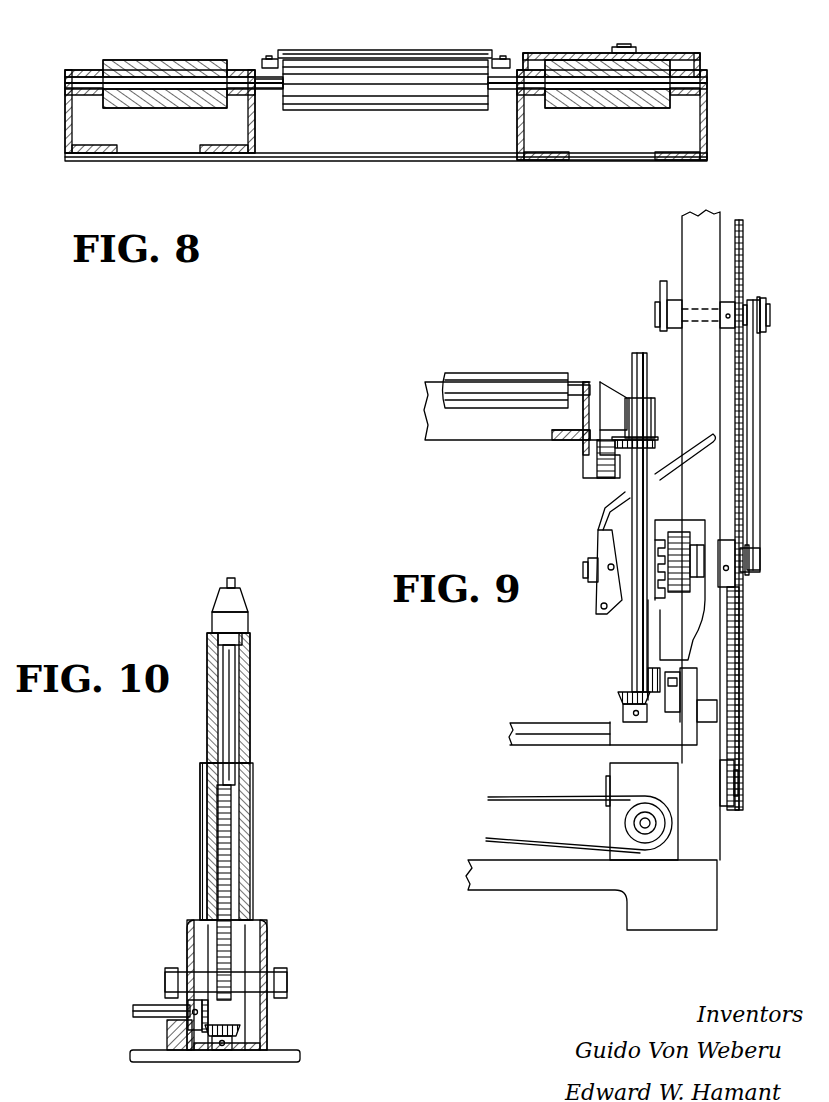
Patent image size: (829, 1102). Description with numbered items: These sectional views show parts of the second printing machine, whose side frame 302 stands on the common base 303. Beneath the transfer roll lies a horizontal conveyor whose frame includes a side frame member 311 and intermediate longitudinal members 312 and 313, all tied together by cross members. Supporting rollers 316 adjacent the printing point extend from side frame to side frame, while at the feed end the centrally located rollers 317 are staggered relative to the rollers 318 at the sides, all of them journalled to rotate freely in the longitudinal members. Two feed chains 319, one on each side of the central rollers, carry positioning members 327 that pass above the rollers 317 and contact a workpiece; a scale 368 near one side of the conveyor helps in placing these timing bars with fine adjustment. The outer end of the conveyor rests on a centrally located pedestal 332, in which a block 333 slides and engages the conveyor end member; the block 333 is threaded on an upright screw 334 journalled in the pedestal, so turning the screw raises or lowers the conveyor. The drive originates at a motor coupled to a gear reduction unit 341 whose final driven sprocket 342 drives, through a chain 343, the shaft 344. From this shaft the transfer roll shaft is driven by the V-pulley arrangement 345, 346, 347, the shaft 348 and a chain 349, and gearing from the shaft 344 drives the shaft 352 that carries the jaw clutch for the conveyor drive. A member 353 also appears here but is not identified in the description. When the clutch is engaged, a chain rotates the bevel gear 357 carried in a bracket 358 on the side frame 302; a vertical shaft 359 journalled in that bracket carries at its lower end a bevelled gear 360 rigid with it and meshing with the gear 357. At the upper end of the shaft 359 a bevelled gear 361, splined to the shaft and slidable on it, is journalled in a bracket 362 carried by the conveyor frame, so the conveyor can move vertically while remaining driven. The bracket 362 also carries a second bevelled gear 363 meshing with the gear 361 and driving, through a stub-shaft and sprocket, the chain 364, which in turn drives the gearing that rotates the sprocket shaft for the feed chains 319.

In FIG. 9, the side frame 302 is at (718, 210).
In FIG. 9, the common base 303 is at (482, 878).
In FIG. 8, the conveyor side frame member 311 is at (708, 108).
In FIG. 8, the intermediate longitudinal member 312 is at (485, 130).
In FIG. 8, the intermediate longitudinal member 313 is at (250, 128).
In FIG. 8, the supporting rollers 316 is at (67, 100).
In FIG. 8, the centrally located rollers 317 is at (432, 72).
In FIG. 8, the side rollers 318 is at (146, 58).
In FIG. 8, the feed chains 319 is at (265, 58).
In FIG. 8, the positioning members 327 is at (352, 50).
In FIG. 10, the pedestal 332 is at (265, 922).
In FIG. 10, the block 333 is at (248, 680).
In FIG. 10, the upright screw 334 is at (232, 868).
In FIG. 9, the gear reduction unit 341 is at (582, 811).
In FIG. 9, the final driven sprocket 342 is at (734, 800).
In FIG. 9, the chain 343 is at (740, 650).
In FIG. 9, the shaft 344 is at (760, 560).
In FIG. 9, the V-pulley 345 is at (760, 548).
In FIG. 9, the V-belt 346 is at (760, 412).
In FIG. 9, the V-pulley 347 is at (760, 332).
In FIG. 9, the shaft 348 is at (770, 316).
In FIG. 9, the chain 349 is at (656, 288).
In FIG. 9, the shaft 352 is at (585, 568).
In FIG. 9, the rack 353 is at (744, 236).
In FIG. 9, the bevel gear 357 is at (645, 660).
In FIG. 9, the bracket 358 is at (700, 696).
In FIG. 9, the vertical shaft 359 is at (632, 354).
In FIG. 9, the bevelled gear 360 is at (618, 696).
In FIG. 9, the bevelled gear 361 is at (655, 430).
In FIG. 9, the bracket 362 is at (590, 455).
In FIG. 9, the second bevelled gear 363 is at (620, 478).
In FIG. 9, the chain 364 is at (600, 462).
In FIG. 8, the scale 368 is at (636, 48).